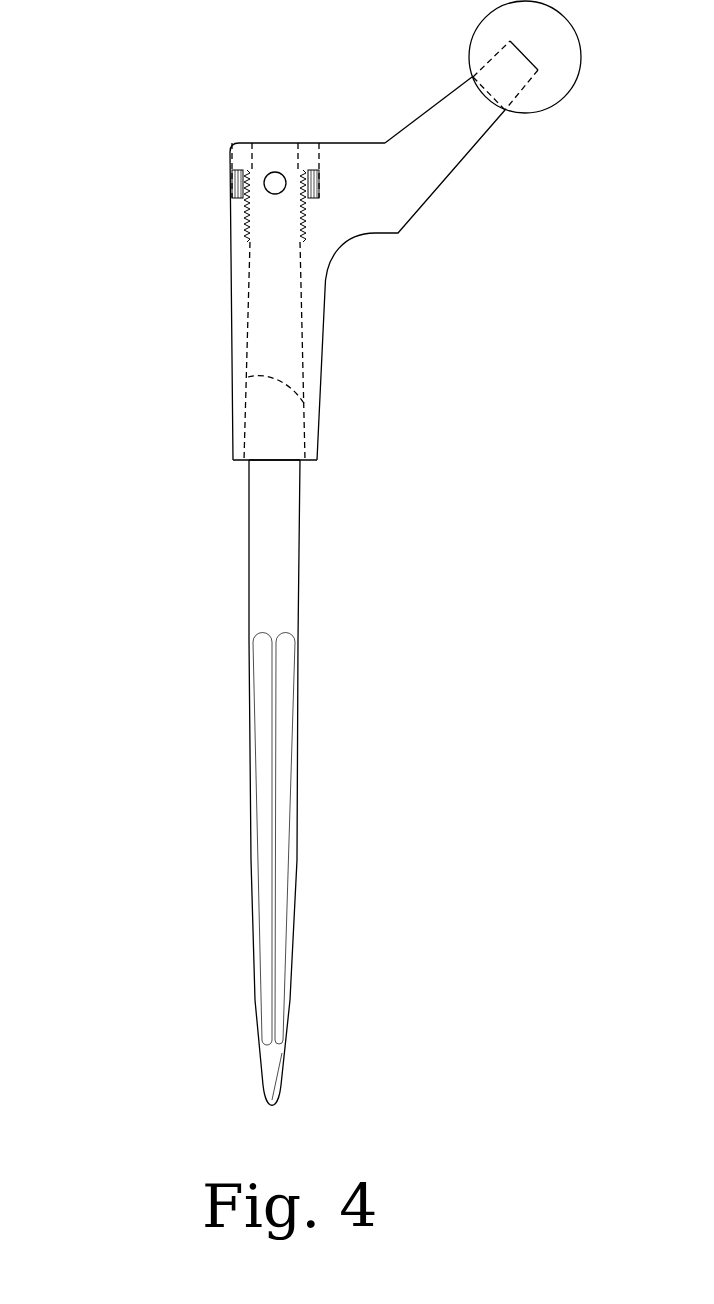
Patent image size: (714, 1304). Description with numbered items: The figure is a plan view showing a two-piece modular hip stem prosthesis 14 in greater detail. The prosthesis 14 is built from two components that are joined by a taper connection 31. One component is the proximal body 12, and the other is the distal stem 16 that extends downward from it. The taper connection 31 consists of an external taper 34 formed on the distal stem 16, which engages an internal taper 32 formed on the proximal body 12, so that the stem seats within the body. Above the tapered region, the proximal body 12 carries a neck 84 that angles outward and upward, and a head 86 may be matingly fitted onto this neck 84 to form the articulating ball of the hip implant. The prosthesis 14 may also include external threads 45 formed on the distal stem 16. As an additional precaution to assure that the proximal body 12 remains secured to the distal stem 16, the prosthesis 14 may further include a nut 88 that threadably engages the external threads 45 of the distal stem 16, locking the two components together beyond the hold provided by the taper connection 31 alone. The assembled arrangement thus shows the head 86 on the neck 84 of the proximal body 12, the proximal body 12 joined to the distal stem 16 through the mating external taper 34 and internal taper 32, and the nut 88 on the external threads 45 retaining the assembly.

The prosthesis 14 is at (134, 93).
The taper connection 31 is at (180, 340).
The proximal body 12 is at (353, 240).
The external threads 45 is at (246, 205).
The nut 88 is at (246, 186).
The internal taper 32 is at (305, 405).
The neck 84 is at (463, 155).
The head 86 is at (582, 60).
The distal stem 16 is at (300, 592).
The external taper 34 is at (249, 482).